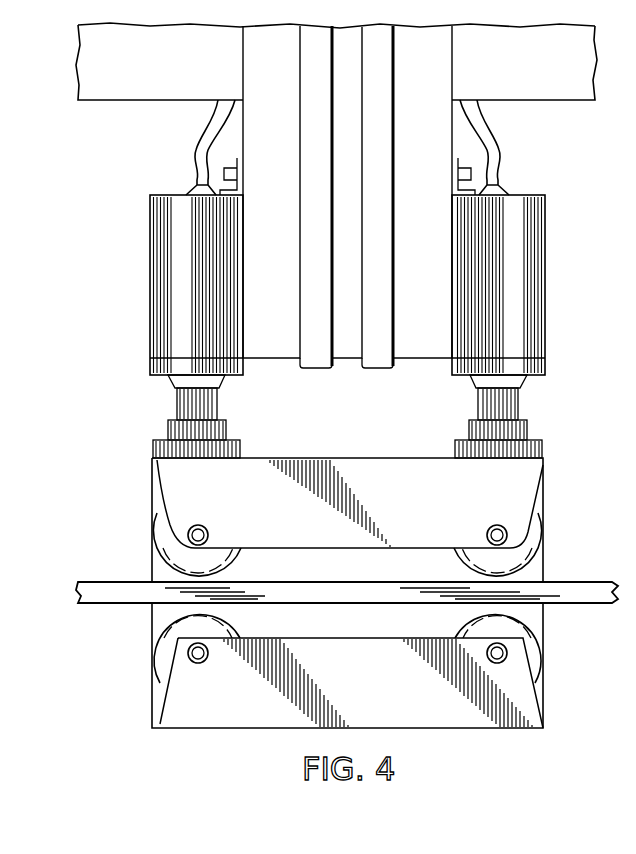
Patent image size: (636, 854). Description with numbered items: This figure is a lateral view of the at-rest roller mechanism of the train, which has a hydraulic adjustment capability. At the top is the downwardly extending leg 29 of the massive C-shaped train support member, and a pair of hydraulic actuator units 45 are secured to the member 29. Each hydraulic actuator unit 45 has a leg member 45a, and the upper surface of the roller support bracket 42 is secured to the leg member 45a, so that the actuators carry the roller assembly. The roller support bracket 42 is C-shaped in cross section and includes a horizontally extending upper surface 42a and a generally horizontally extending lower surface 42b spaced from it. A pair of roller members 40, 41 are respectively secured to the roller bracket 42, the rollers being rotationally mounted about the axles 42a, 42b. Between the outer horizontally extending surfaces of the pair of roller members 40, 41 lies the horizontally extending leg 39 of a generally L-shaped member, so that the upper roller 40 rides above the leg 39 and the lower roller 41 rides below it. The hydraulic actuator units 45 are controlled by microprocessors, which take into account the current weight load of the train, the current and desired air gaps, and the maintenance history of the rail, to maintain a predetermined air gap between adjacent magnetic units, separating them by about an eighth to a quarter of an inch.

The downwardly extending leg 29 is at (438, 204).
The horizontally extending leg 39 is at (95, 582).
The roller member 40 is at (160, 527).
The roller member 41 is at (158, 654).
The roller support bracket 42 is at (391, 449).
The upper surface / axle 42a is at (201, 527).
The lower surface / axle 42b is at (194, 663).
The hydraulic actuator unit 45 is at (150, 321).
The leg member 45a is at (177, 405).